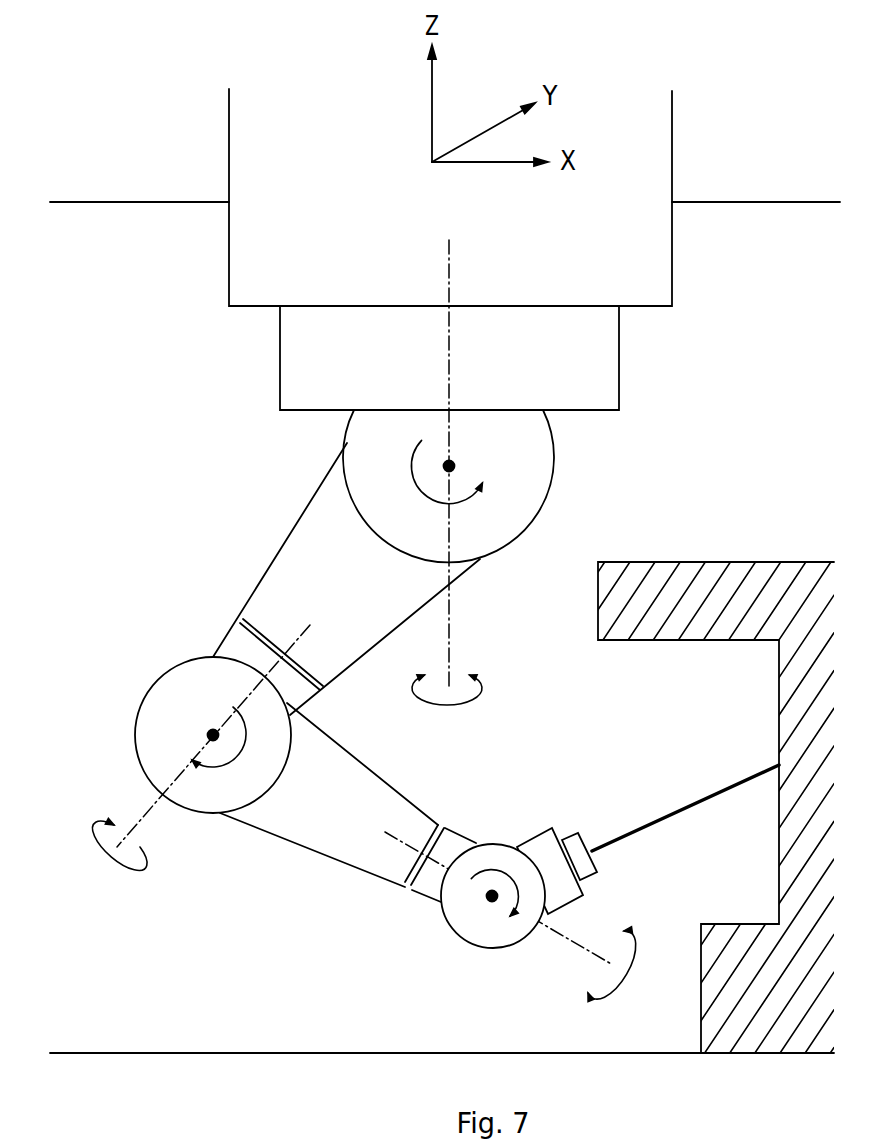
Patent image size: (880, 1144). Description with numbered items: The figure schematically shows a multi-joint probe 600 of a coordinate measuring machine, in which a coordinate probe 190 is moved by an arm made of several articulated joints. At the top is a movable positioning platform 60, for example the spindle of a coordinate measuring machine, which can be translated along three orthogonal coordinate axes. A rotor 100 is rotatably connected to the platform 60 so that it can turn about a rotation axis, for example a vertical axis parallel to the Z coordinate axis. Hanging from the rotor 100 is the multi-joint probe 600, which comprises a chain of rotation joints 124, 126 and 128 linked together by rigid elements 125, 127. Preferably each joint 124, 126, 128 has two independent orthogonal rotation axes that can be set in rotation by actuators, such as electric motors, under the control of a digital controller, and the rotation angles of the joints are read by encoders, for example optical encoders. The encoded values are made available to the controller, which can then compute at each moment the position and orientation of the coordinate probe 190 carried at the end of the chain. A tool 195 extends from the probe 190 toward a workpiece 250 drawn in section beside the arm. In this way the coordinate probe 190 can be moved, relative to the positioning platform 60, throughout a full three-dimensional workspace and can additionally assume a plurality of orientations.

The positioning platform 60 is at (633, 254).
The rotor 100 is at (572, 359).
The rotation joint 124 is at (522, 505).
The rigid element 125 is at (336, 553).
The rotation joint 126 is at (193, 695).
The rigid element 127 is at (315, 823).
The rotation joint 128 is at (458, 914).
The coordinate probe 190 is at (572, 848).
The tool 195 is at (718, 787).
The workpiece 250 is at (738, 595).
The multi-joint probe 600 is at (110, 408).